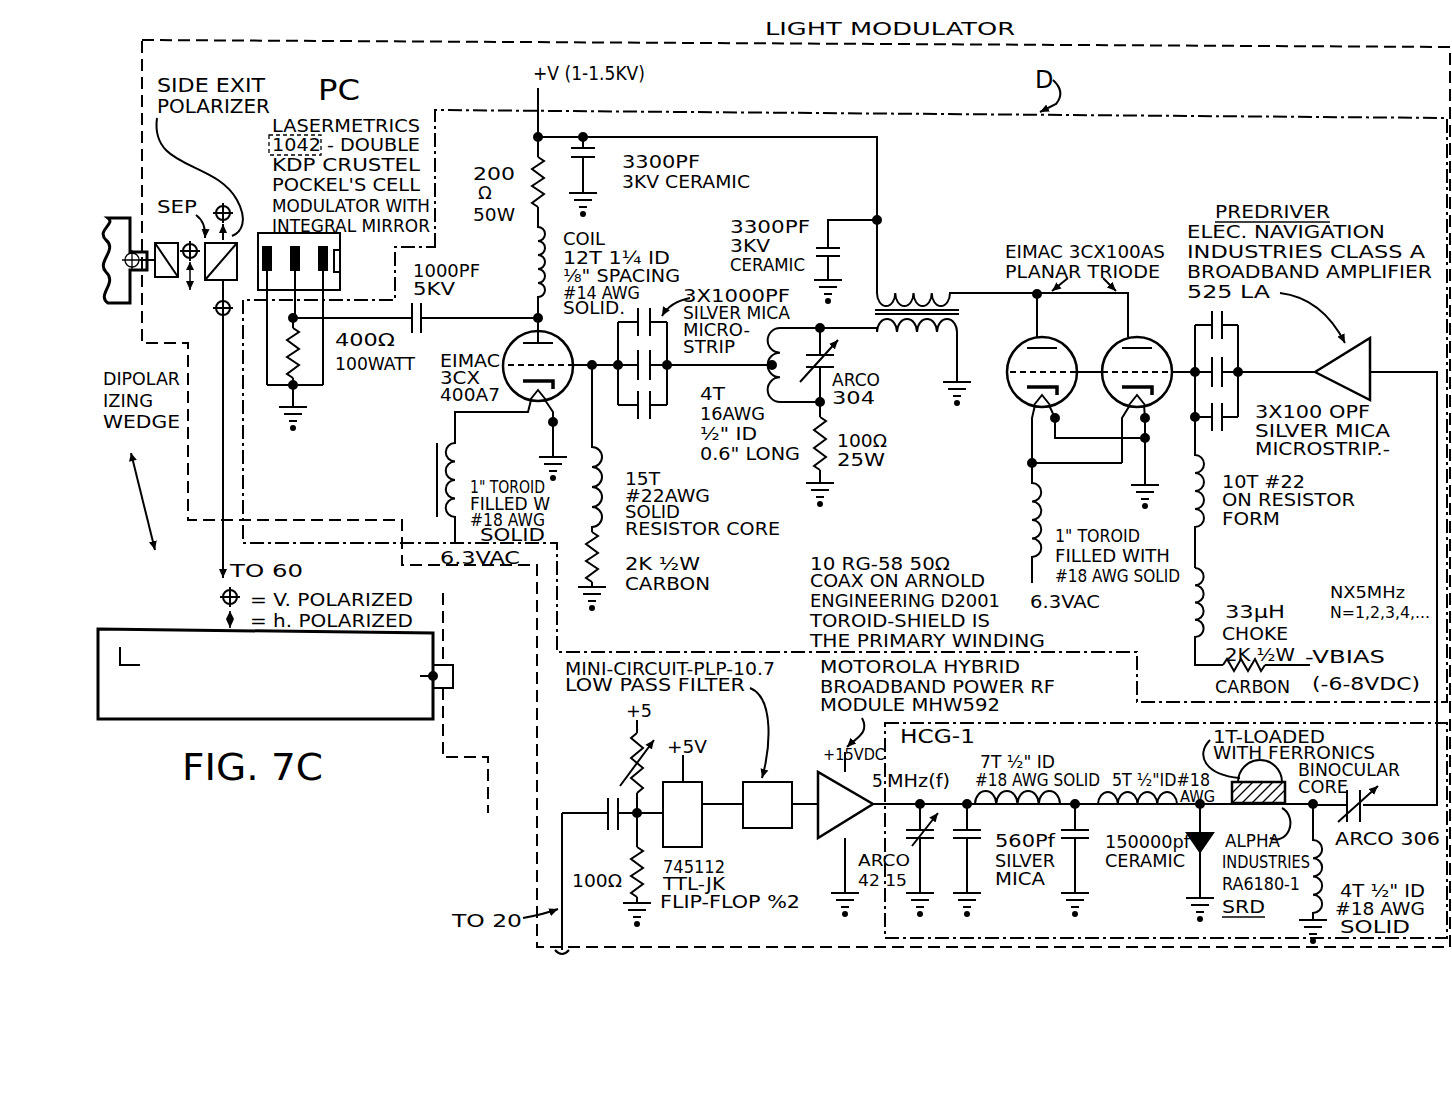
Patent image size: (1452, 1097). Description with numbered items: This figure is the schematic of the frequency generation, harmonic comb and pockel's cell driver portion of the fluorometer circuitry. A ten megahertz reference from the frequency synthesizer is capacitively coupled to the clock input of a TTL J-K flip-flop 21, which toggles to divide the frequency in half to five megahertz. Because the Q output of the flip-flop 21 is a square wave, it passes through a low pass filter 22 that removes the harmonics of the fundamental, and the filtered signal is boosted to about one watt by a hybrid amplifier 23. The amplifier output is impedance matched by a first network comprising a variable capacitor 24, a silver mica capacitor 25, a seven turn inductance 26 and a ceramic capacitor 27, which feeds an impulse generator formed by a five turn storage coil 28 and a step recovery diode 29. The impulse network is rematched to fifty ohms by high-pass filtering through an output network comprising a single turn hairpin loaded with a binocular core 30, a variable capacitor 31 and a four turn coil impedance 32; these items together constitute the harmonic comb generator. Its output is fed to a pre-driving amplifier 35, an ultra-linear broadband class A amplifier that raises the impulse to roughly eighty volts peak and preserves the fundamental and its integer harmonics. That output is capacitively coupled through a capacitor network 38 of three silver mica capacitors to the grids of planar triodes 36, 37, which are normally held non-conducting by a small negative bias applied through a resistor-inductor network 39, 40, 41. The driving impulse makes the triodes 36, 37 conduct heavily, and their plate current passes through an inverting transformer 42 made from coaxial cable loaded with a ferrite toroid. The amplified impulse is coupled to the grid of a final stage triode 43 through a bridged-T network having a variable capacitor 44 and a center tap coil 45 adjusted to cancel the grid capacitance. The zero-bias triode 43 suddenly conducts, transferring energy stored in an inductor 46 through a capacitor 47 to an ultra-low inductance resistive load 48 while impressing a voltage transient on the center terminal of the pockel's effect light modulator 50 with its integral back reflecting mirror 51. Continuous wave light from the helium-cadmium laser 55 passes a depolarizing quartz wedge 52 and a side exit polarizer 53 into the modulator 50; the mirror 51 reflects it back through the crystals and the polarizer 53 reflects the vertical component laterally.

The J-K flip-flop 21 is at (702, 830).
The low pass filter 22 is at (775, 829).
The hybrid amplifier 23 is at (818, 776).
The variable capacitor 24 is at (926, 846).
The silver mica capacitor 25 is at (968, 813).
The inductance 26 is at (1022, 813).
The ceramic capacitor 27 is at (1082, 842).
The storage coil 28 is at (1130, 813).
The step recovery diode 29 is at (1192, 846).
The single turn hairpin loaded with binocular core 30 is at (1262, 806).
The variable capacitor 31 is at (1374, 793).
The impedance 32 is at (1326, 866).
The pre-driving amplifier 35 is at (1372, 385).
The planar triode 36 is at (1145, 342).
The planar triode 37 is at (1050, 343).
The capacitor network 38 is at (1244, 325).
The resistor-inductor network element 39 is at (1208, 530).
The resistor-inductor network element 40 is at (1208, 578).
The resistor-inductor network element 41 is at (1296, 664).
The inverting transformer 42 is at (907, 291).
The final stage triode 43 is at (566, 344).
The variable capacitor 44 is at (842, 360).
The coil 45 is at (776, 372).
The inductor 46 is at (538, 262).
The capacitor 47 is at (430, 322).
The resistive load 48 is at (305, 380).
The pockel's effect electro-optic light modulator 50 is at (324, 244).
The integral back reflecting mirror 51 is at (341, 268).
The depolarizing quartz wedge 52 is at (160, 353).
The side exit polarizer 53 is at (239, 228).
The CW light source 55 is at (118, 305).